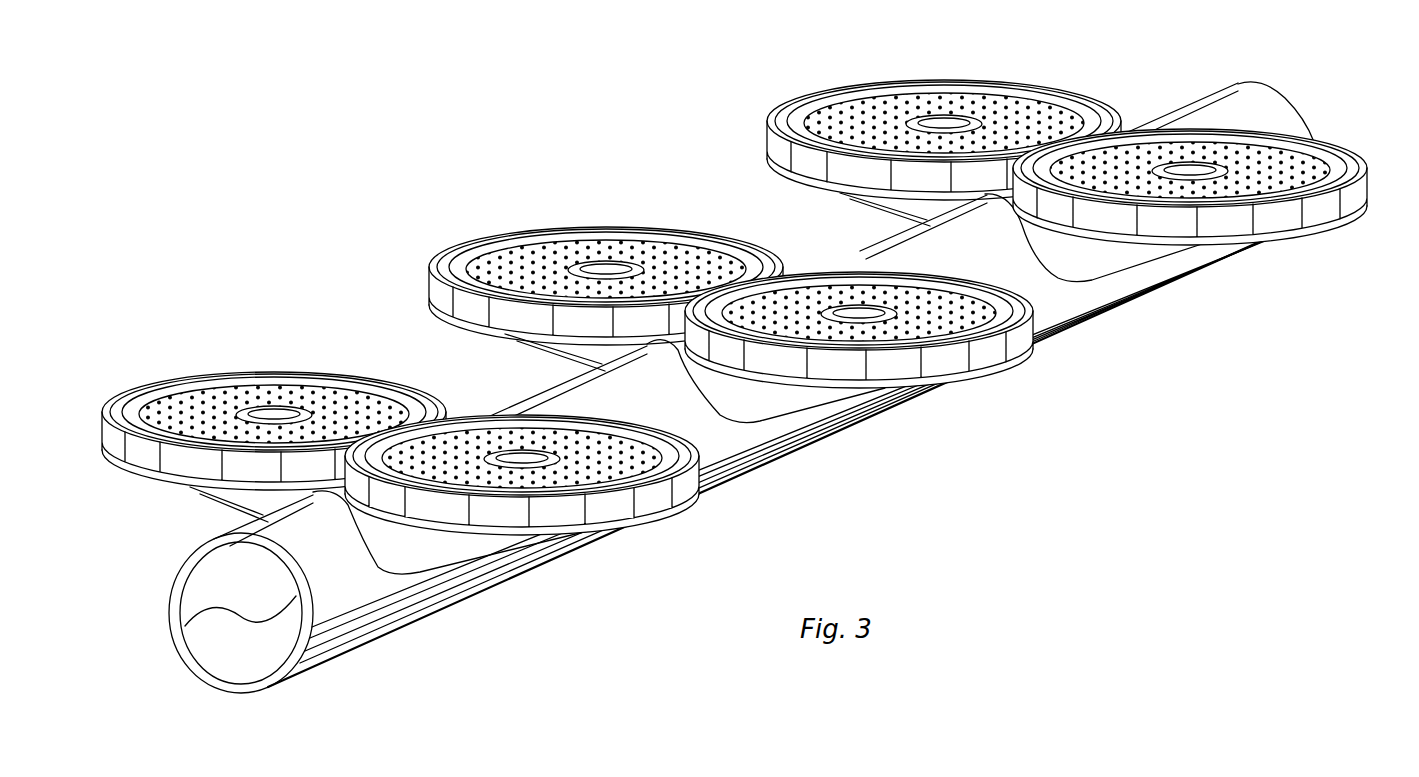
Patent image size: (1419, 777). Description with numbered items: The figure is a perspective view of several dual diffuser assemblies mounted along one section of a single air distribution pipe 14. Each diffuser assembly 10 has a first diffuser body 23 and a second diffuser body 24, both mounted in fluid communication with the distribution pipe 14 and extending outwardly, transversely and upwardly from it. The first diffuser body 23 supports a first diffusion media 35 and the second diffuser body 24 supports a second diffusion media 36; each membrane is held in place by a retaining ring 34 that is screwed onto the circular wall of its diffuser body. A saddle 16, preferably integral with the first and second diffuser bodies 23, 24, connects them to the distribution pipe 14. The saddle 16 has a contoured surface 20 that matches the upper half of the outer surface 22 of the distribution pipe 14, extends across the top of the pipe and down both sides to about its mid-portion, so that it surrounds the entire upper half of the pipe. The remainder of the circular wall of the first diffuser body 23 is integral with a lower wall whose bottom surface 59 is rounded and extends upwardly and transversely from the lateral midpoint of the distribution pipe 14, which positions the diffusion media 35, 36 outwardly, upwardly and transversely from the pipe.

The diffuser assembly 10 is at (810, 400).
The air distribution pipe 14 is at (400, 620).
The saddle 16 is at (432, 592).
The contoured surface 20 is at (368, 580).
The outer surface 22 is at (880, 212).
The first diffuser body 23 is at (580, 545).
The second diffuser body 24 is at (770, 135).
The retaining ring 34 is at (775, 160).
The first diffusion media 35 is at (255, 393).
The second diffusion media 36 is at (882, 118).
The bottom surface 59 is at (490, 592).